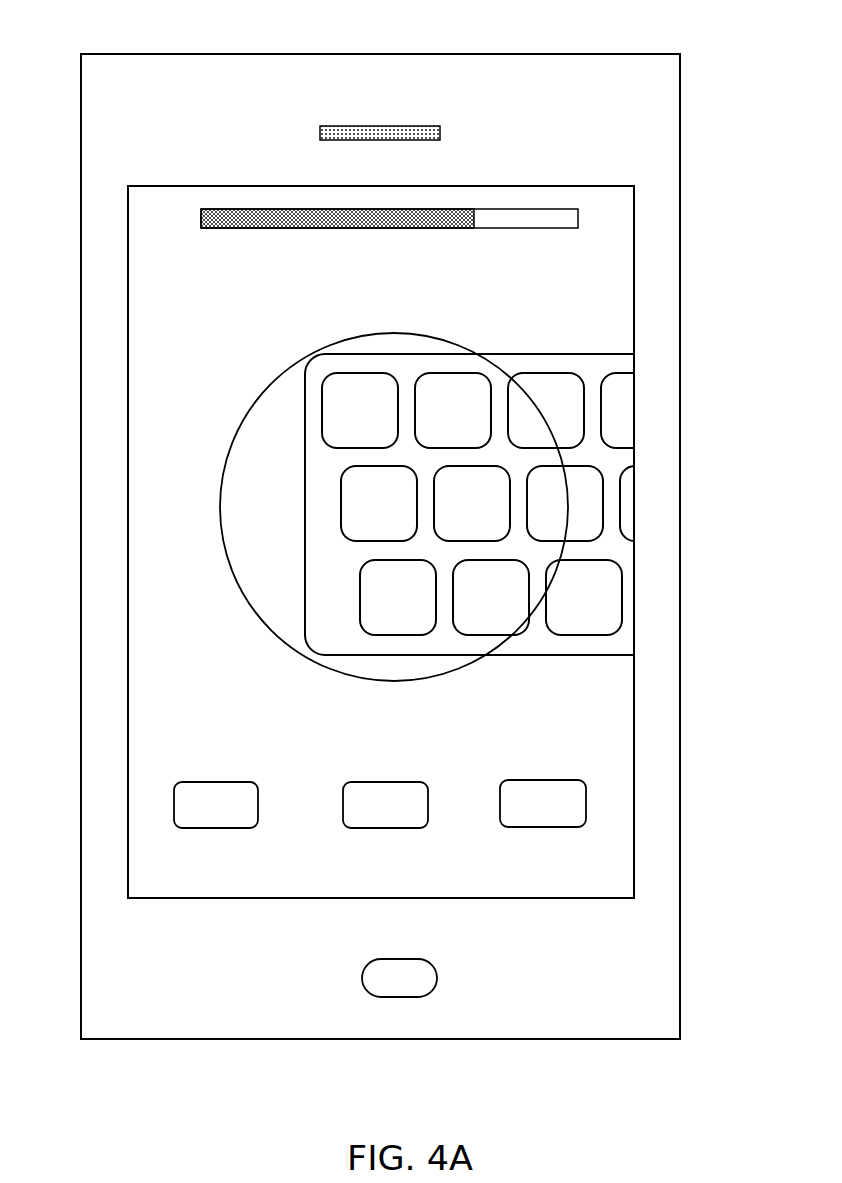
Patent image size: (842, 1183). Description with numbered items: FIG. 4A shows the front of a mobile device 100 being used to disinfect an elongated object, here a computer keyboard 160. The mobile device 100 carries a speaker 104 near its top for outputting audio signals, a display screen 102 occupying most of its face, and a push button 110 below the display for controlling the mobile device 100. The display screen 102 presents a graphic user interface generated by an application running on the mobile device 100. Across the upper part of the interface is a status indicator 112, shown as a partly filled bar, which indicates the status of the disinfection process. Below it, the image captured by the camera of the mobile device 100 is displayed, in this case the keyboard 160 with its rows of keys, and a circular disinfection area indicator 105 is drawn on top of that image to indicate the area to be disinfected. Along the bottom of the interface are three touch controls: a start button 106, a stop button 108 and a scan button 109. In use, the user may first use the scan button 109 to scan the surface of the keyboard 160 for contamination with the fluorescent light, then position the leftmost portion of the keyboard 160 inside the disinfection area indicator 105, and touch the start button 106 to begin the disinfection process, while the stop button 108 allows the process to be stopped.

The mobile device 100 is at (550, 54).
The display screen 102 is at (634, 241).
The speaker 104 is at (418, 126).
The disinfection area indicator 105 is at (370, 333).
The start button 106 is at (216, 828).
The stop button 108 is at (395, 828).
The scan button 109 is at (553, 827).
The push button 110 is at (405, 997).
The status indicator 112 is at (287, 210).
The keyboard 160 is at (512, 354).